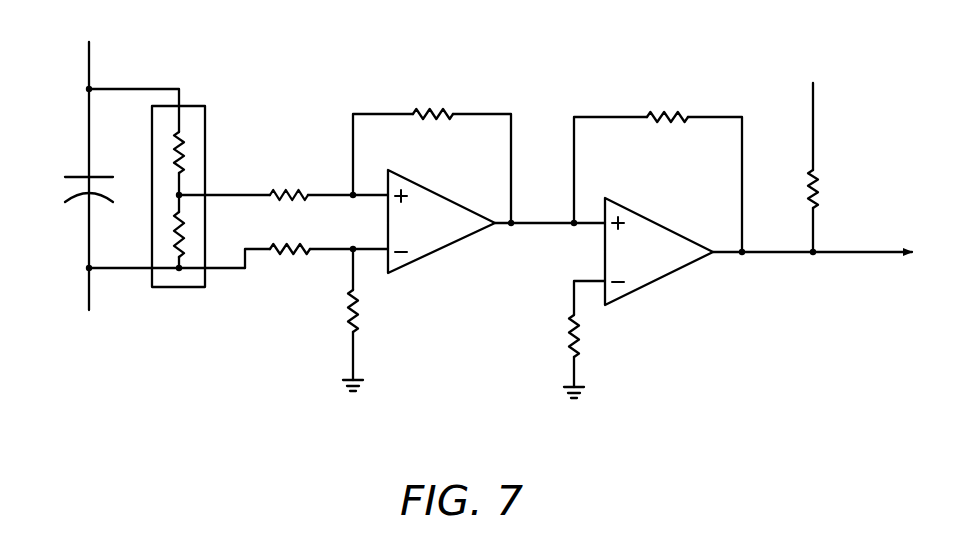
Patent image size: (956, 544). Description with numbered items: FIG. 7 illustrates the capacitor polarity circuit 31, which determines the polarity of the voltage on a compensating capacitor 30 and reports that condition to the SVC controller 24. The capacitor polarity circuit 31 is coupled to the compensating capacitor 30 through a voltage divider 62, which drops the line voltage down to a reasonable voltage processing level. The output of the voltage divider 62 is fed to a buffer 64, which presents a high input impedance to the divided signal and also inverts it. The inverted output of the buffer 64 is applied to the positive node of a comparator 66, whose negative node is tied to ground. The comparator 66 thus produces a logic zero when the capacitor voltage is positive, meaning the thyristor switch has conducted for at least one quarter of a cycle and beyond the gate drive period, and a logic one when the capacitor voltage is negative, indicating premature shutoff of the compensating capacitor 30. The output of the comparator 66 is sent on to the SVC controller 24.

The compensating capacitor 30 is at (72, 162).
The capacitor polarity circuit 31 is at (462, 210).
The voltage divider 62 is at (173, 216).
The buffer 64 is at (441, 231).
The comparator 66 is at (659, 258).
The SVC controller 24 is at (820, 293).